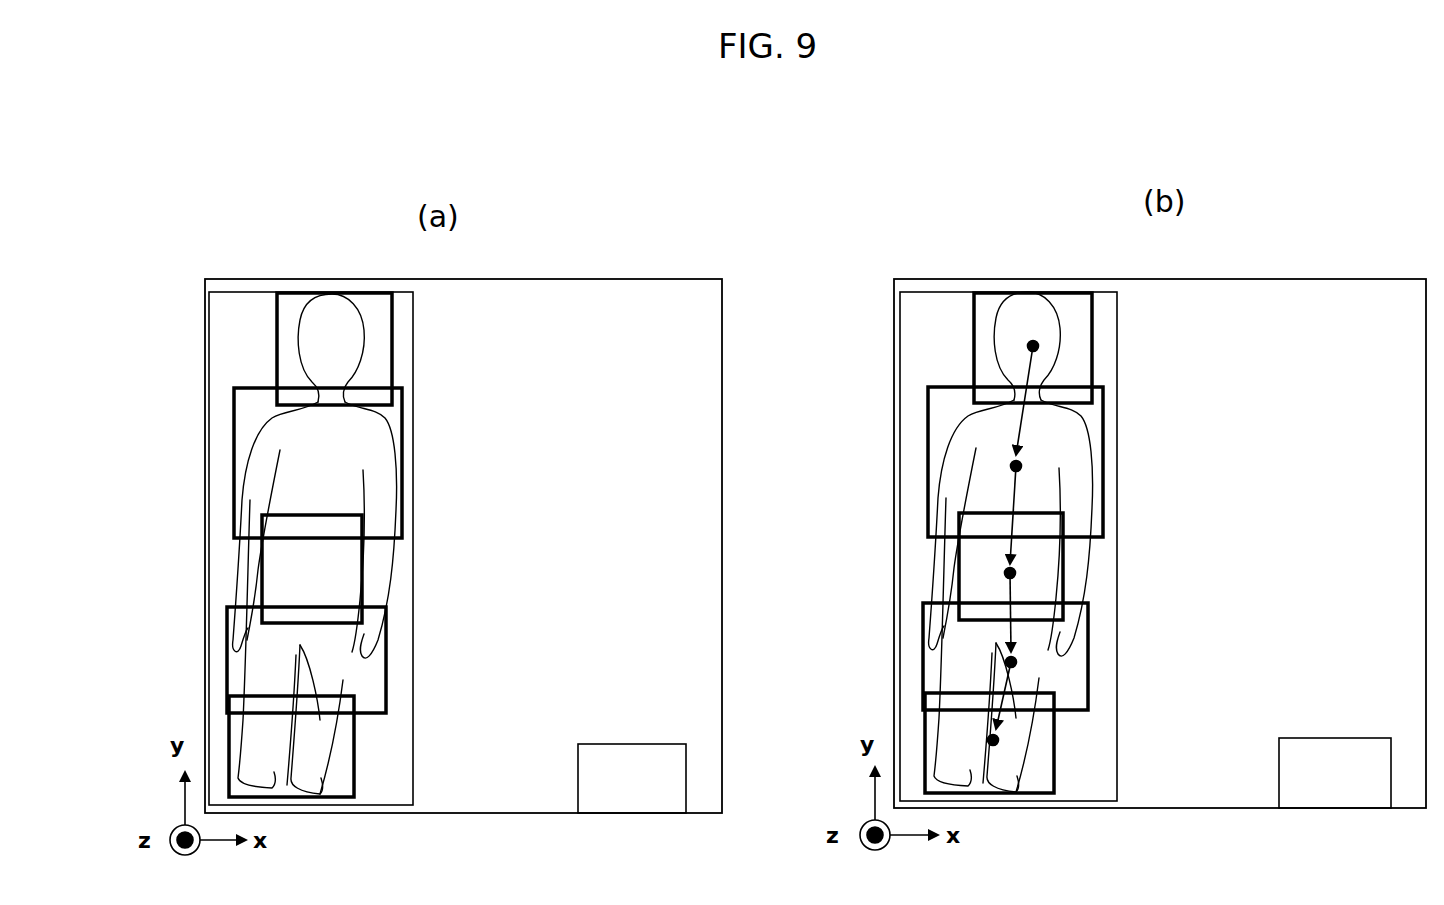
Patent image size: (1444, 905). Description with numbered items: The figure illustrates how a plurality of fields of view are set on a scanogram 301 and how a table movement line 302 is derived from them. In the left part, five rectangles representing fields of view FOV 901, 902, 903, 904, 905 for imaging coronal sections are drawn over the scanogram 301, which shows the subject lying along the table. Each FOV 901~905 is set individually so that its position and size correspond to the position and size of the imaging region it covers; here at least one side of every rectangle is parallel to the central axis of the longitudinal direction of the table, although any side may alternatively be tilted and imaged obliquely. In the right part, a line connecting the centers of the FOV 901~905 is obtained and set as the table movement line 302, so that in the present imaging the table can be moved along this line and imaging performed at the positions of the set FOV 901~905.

The scanogram 301 is at (372, 788).
The table movement line 302 is at (1012, 361).
The FOV 901 is at (368, 348).
The FOV 902 is at (362, 452).
The FOV 903 is at (333, 579).
The FOV 904 is at (332, 665).
The FOV 905 is at (343, 755).